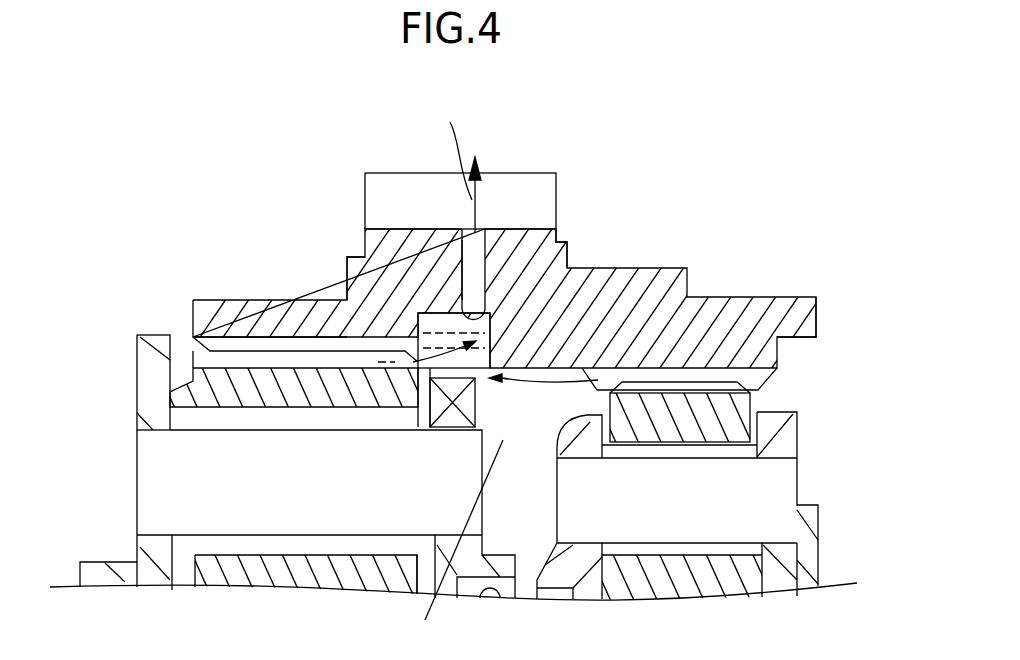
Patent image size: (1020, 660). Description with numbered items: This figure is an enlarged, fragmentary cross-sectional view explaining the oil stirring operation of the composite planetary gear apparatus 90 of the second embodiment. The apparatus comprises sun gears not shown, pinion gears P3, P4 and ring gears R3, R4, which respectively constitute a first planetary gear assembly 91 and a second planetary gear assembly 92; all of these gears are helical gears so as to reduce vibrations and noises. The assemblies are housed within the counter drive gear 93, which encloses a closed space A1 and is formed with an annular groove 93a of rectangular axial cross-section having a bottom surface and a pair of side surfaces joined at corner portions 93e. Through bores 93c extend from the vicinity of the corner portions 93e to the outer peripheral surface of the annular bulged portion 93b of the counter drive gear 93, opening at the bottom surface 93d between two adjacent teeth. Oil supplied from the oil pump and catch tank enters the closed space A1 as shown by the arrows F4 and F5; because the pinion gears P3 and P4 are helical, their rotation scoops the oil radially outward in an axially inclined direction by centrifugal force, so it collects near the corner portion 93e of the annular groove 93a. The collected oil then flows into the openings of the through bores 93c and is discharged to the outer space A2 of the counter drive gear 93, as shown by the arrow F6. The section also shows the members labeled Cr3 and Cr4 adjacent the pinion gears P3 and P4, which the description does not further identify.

The composite planetary gear apparatus 90 is at (647, 171).
The first planetary gear assembly 91 is at (202, 278).
The second planetary gear assembly 92 is at (833, 321).
The counter drive gear 93 is at (652, 267).
The annular groove 93a is at (472, 310).
The annular bulged portion 93b is at (347, 266).
The through bores 93c is at (467, 262).
The bottom surface 93d is at (545, 228).
The corner portions 93e is at (483, 313).
The ring gear R3 is at (193, 313).
The ring gear R4 is at (776, 353).
The pinion gear P3 is at (193, 382).
The pinion gear P4 is at (757, 403).
The third carrier Cr3 is at (137, 452).
The fourth carrier Cr4 is at (797, 487).
The arrow F4 is at (408, 364).
The arrow F5 is at (540, 383).
The arrow F6 is at (443, 153).
The closed space A1 is at (449, 548).
The outer space A2 is at (483, 133).